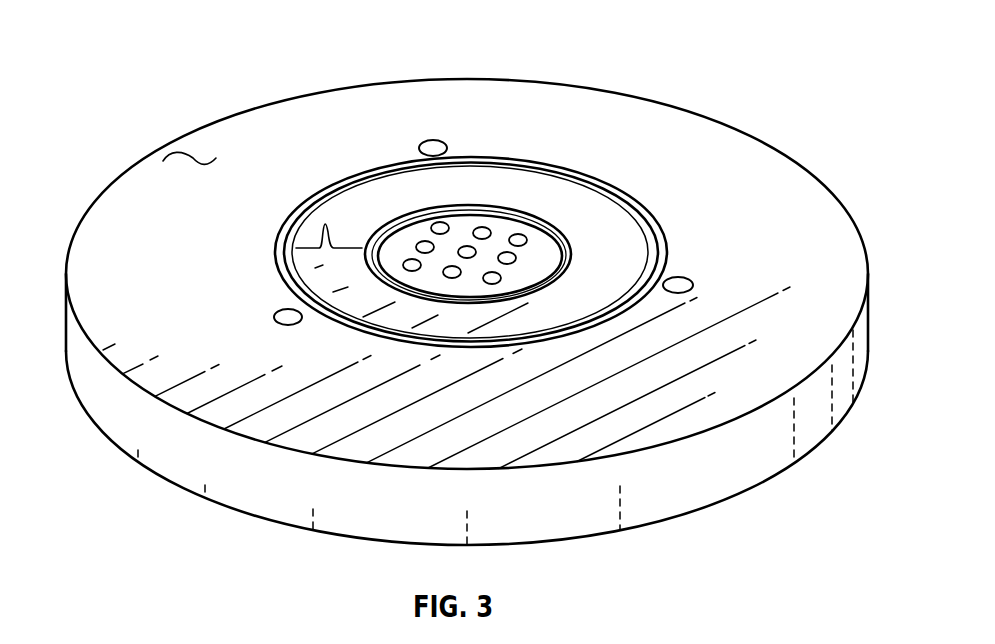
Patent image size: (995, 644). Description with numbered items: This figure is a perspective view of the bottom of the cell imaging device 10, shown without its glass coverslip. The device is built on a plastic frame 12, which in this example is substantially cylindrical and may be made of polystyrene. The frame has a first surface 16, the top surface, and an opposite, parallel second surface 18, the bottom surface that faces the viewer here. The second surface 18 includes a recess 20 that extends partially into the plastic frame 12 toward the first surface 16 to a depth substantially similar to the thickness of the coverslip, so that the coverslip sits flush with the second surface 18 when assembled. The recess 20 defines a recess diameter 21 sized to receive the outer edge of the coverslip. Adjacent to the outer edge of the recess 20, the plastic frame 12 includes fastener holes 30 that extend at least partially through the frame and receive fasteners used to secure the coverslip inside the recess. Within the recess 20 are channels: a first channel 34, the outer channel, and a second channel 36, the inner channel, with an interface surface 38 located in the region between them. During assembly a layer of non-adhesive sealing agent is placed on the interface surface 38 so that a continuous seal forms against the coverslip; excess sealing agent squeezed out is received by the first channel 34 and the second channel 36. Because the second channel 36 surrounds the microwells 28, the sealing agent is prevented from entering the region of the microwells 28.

The cell imaging device 10 is at (125, 30).
The plastic frame 12 is at (58, 328).
The first surface 16 is at (118, 448).
The second surface 18 is at (193, 158).
The recess 20 is at (620, 185).
The recess diameter 21 is at (662, 240).
The microwells 28 is at (467, 249).
The fastener hole 30 is at (419, 147).
The first channel 34 is at (398, 335).
The second channel 36 is at (563, 268).
The interface surface 38 is at (323, 222).